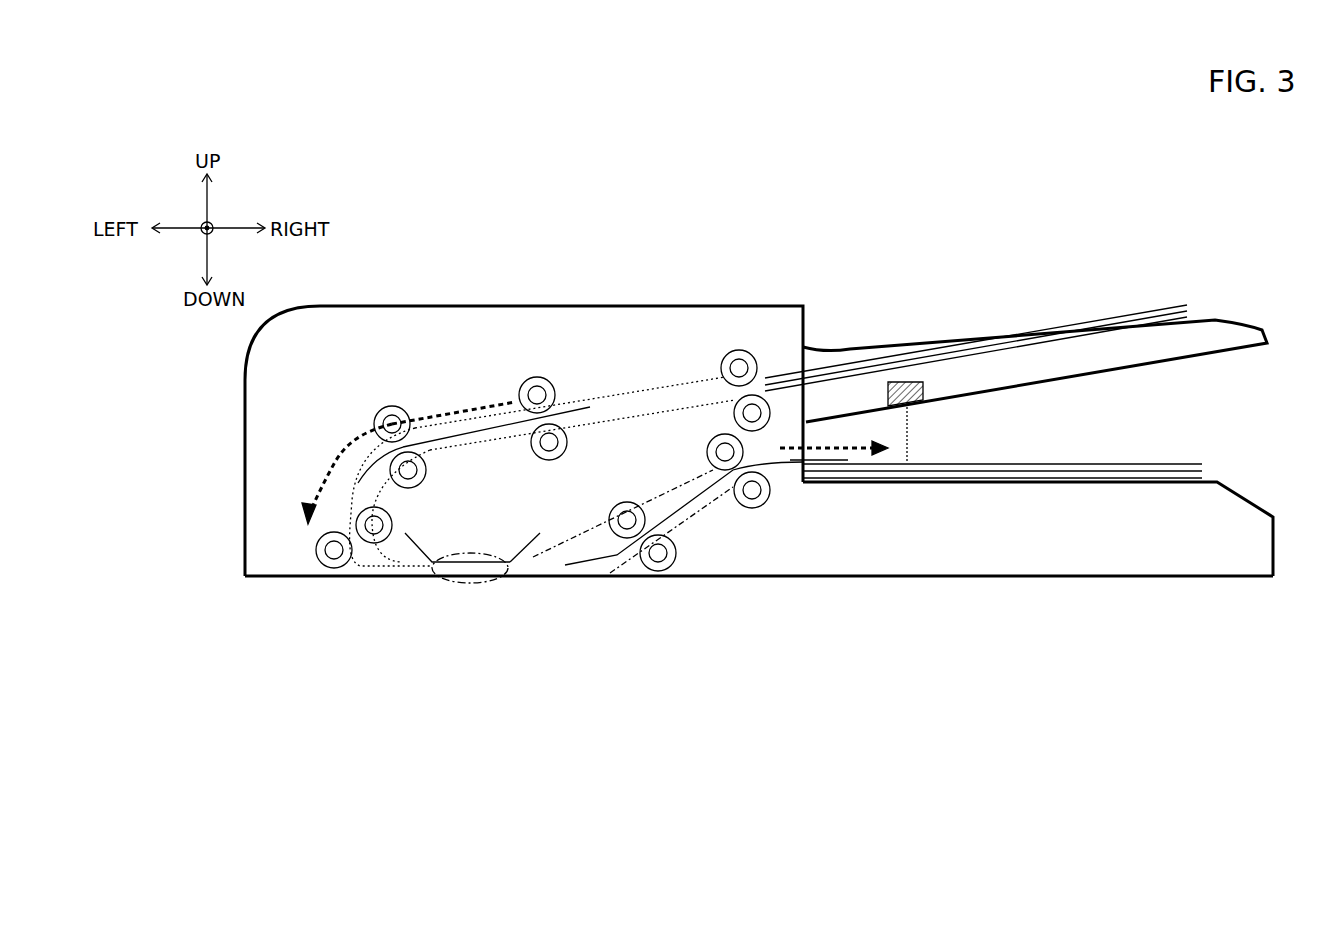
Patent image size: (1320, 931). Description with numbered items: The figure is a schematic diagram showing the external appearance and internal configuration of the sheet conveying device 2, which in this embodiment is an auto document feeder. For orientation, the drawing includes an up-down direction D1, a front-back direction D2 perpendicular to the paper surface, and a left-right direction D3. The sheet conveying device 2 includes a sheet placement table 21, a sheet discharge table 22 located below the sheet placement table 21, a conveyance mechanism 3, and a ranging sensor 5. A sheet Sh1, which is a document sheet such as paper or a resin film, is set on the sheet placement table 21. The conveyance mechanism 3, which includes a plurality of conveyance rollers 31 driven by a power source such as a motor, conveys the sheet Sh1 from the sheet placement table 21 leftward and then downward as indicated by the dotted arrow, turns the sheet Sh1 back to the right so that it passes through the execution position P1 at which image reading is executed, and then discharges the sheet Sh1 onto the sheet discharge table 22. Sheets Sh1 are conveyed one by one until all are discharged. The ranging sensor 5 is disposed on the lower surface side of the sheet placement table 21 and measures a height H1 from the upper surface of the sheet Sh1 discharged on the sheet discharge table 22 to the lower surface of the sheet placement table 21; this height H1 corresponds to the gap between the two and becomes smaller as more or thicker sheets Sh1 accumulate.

The sheet conveying device 2 is at (244, 390).
The conveyance mechanism 3 is at (512, 392).
The conveyance rollers 31 is at (388, 407).
The sheet placement table 21 is at (1245, 325).
The sheet discharge table 22 is at (1210, 480).
The ranging sensor 5 is at (920, 380).
The height H1 is at (907, 435).
The execution position P1 is at (440, 580).
The sheet Sh1 is at (572, 407).
The up-down direction D1 is at (205, 218).
The front-back direction D2 is at (205, 240).
The left-right direction D3 is at (243, 235).